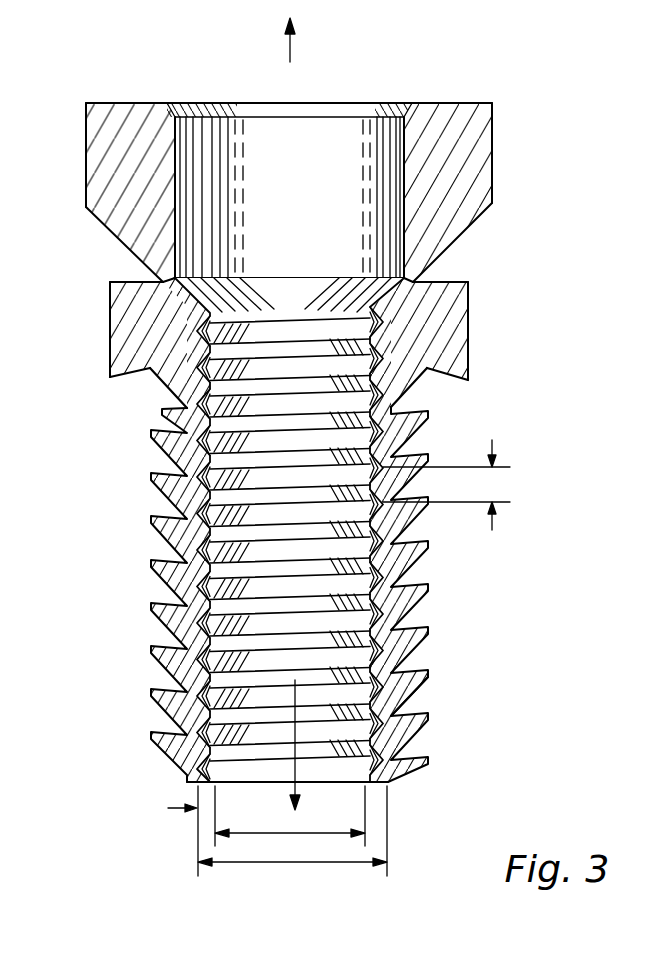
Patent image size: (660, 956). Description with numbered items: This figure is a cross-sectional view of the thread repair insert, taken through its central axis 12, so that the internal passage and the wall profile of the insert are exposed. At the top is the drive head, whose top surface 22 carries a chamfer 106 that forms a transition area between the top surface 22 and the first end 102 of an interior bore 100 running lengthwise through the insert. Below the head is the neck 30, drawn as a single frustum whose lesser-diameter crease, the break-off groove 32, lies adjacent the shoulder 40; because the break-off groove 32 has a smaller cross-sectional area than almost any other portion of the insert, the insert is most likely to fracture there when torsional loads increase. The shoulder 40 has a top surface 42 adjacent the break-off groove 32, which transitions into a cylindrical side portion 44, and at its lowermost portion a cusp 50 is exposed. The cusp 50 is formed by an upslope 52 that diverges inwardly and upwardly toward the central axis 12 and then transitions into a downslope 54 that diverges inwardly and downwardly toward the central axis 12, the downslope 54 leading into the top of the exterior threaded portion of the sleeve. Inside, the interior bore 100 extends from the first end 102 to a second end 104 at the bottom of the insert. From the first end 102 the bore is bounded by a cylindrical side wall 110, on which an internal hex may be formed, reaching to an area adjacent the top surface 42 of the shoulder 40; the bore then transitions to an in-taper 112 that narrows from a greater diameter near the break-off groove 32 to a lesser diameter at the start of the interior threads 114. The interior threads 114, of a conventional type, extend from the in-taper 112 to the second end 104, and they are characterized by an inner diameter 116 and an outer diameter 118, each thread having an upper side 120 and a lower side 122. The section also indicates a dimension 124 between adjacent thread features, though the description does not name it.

The interior bore 100 is at (344, 78).
The central axis 12 is at (290, 55).
The top surface 22 is at (90, 100).
The neck 30 is at (456, 240).
The break-off groove 32 is at (143, 272).
The shoulder 40 is at (148, 332).
The top surface 42 is at (113, 281).
The cylindrical side portion 44 is at (110, 308).
The cusp 50 is at (131, 436).
The upslope 52 is at (110, 378).
The downslope 54 is at (167, 390).
The first end 102 is at (262, 115).
The second end 104 is at (337, 783).
The chamfer 106 is at (380, 104).
The cylindrical side wall 110 is at (404, 176).
The in-taper 112 is at (356, 280).
The interior threads 114 is at (335, 315).
The inner diameter 116 is at (289, 832).
The outer diameter 118 is at (285, 862).
The upper side 120 is at (396, 622).
The lower side 122 is at (380, 690).
The thread pitch 124 is at (447, 485).